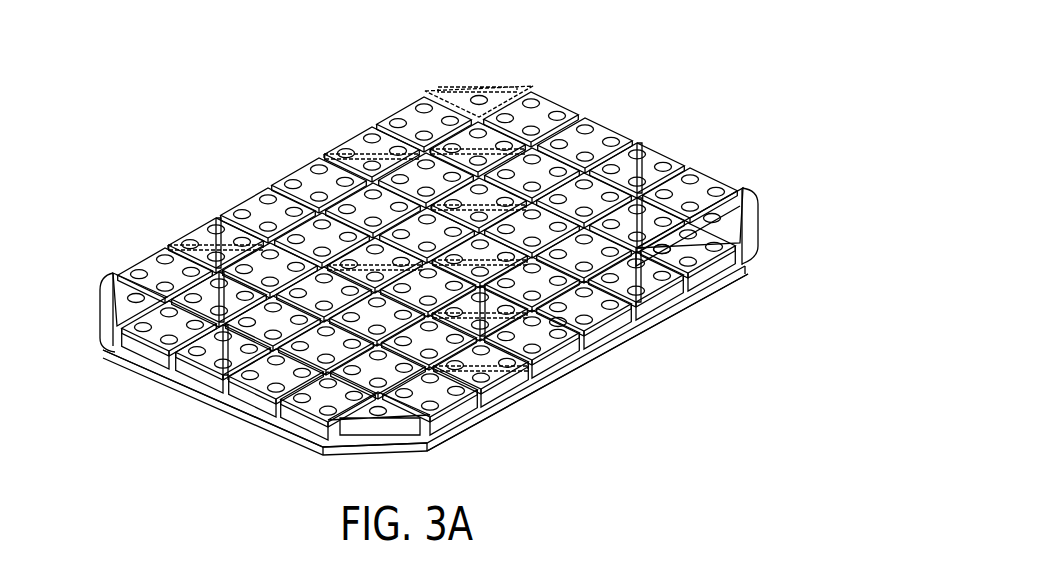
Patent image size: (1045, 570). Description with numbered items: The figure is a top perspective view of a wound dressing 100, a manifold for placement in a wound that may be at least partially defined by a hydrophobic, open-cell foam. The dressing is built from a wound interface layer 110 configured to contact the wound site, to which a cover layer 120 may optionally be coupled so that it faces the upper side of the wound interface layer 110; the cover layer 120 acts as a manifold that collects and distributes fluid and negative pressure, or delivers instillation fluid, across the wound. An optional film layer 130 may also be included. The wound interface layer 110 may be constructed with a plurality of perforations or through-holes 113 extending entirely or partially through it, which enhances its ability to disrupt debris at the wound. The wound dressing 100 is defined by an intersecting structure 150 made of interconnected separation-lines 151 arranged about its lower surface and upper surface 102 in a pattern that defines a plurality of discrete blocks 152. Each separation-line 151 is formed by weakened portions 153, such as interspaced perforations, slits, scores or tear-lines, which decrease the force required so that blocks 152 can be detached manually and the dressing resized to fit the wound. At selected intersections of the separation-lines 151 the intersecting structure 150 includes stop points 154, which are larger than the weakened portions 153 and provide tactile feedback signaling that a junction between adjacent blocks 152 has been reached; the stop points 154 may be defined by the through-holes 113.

The wound dressing 100 is at (663, 45).
The upper surface 102 is at (292, 440).
The wound interface layer 110 is at (138, 350).
The through-holes 113 is at (567, 328).
The cover layer 120 is at (475, 452).
The film layer 130 is at (752, 228).
The intersecting structure 150 is at (363, 190).
The separation-lines 151 is at (216, 212).
The discrete blocks 152 is at (672, 268).
The weakened portions 153 is at (220, 377).
The stop points 154 is at (162, 248).